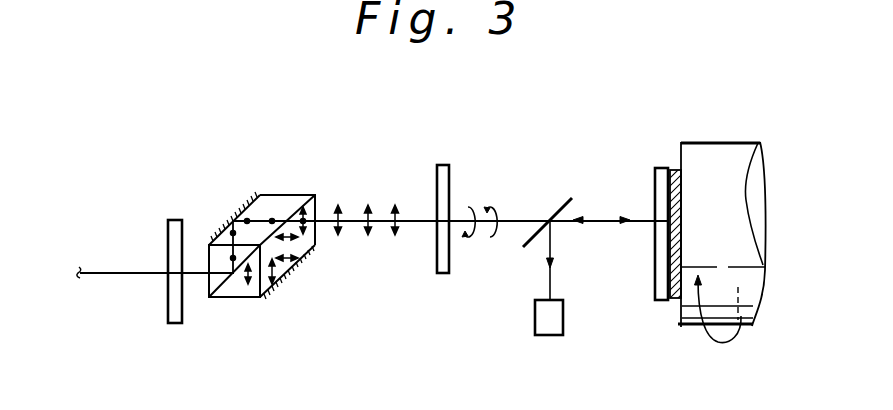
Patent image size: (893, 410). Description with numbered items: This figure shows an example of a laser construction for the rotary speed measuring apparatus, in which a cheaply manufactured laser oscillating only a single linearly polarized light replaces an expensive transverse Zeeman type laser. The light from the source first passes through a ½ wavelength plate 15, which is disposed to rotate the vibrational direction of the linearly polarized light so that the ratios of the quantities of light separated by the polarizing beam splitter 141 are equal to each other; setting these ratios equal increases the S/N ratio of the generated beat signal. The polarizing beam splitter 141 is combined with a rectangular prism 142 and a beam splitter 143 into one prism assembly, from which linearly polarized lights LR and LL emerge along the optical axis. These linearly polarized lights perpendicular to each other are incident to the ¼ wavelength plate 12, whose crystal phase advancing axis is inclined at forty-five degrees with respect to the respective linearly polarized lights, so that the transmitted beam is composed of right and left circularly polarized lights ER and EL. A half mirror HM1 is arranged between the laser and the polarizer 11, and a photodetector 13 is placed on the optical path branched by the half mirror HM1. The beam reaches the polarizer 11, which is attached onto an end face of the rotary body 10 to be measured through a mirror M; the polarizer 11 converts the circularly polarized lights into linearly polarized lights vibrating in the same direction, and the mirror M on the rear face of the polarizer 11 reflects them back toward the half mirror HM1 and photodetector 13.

The rotary body 10 is at (722, 147).
The polarizer 11 is at (655, 287).
The ¼ wavelength plate 12 is at (438, 265).
The photodetector 13 is at (535, 322).
The ½ wavelength plate 15 is at (177, 222).
The polarizing beam splitter 141 is at (233, 292).
The rectangular prism 142 is at (253, 212).
The beam splitter 143 is at (277, 198).
The linearly polarized light LR is at (336, 217).
The linearly polarized light LL is at (340, 217).
The right circularly polarized light ER is at (467, 208).
The left circularly polarized light EL is at (488, 208).
The half mirror HM1 is at (563, 202).
The mirror M is at (675, 168).